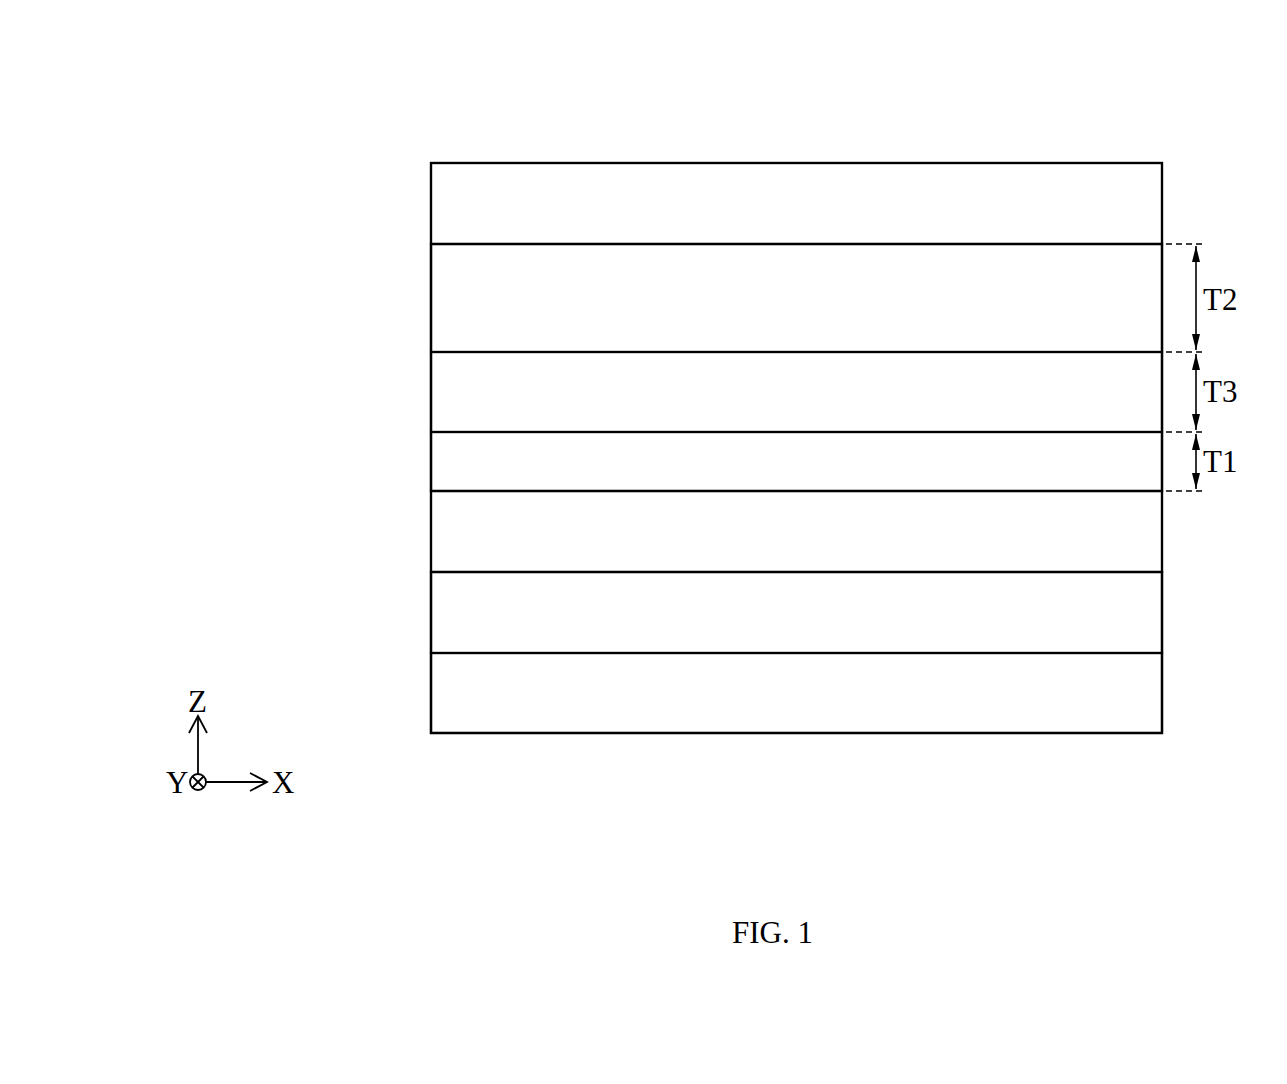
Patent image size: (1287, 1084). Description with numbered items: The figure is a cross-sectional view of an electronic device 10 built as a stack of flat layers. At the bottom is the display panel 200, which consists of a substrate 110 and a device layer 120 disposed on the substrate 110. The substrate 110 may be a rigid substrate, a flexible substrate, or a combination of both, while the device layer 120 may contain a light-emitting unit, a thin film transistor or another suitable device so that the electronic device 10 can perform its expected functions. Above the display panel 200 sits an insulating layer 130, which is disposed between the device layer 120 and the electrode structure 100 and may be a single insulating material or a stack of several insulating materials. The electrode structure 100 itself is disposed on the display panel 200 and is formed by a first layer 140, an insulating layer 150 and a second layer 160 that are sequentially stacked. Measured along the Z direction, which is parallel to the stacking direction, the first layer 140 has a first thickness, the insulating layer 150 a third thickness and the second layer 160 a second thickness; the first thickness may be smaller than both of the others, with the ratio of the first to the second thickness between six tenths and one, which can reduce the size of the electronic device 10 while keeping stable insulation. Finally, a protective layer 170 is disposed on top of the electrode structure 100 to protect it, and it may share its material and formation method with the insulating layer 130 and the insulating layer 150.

The electronic device 10 is at (336, 85).
The electrode structure 100 is at (350, 277).
The substrate 110 is at (447, 696).
The device layer 120 is at (447, 613).
The insulating layer 130 is at (447, 532).
The first layer 140 is at (447, 462).
The insulating layer 150 is at (447, 392).
The second layer 160 is at (447, 298).
The protective layer 170 is at (447, 203).
The display panel 200 is at (351, 593).